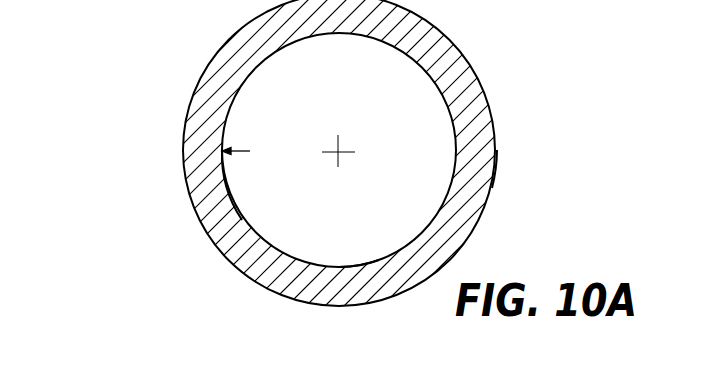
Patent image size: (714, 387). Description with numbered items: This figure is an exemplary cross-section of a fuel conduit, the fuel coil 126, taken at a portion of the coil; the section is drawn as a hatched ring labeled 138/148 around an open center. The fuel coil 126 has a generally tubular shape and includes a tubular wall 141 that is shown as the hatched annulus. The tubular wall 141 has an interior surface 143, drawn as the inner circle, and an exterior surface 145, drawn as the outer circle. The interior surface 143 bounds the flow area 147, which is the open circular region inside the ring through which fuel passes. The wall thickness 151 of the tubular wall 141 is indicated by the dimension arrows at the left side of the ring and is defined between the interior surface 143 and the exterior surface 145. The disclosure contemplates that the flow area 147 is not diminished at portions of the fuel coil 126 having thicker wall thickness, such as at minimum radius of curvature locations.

The fuel coil 126 is at (65, 289).
The tubular wall segment 138 is at (357, 160).
The tubular wall segment 148 is at (520, 95).
The tubular wall 141 is at (237, 234).
The interior surface 143 is at (380, 257).
The exterior surface 145 is at (497, 150).
The flow area 147 is at (323, 96).
The wall thickness 151 is at (182, 151).